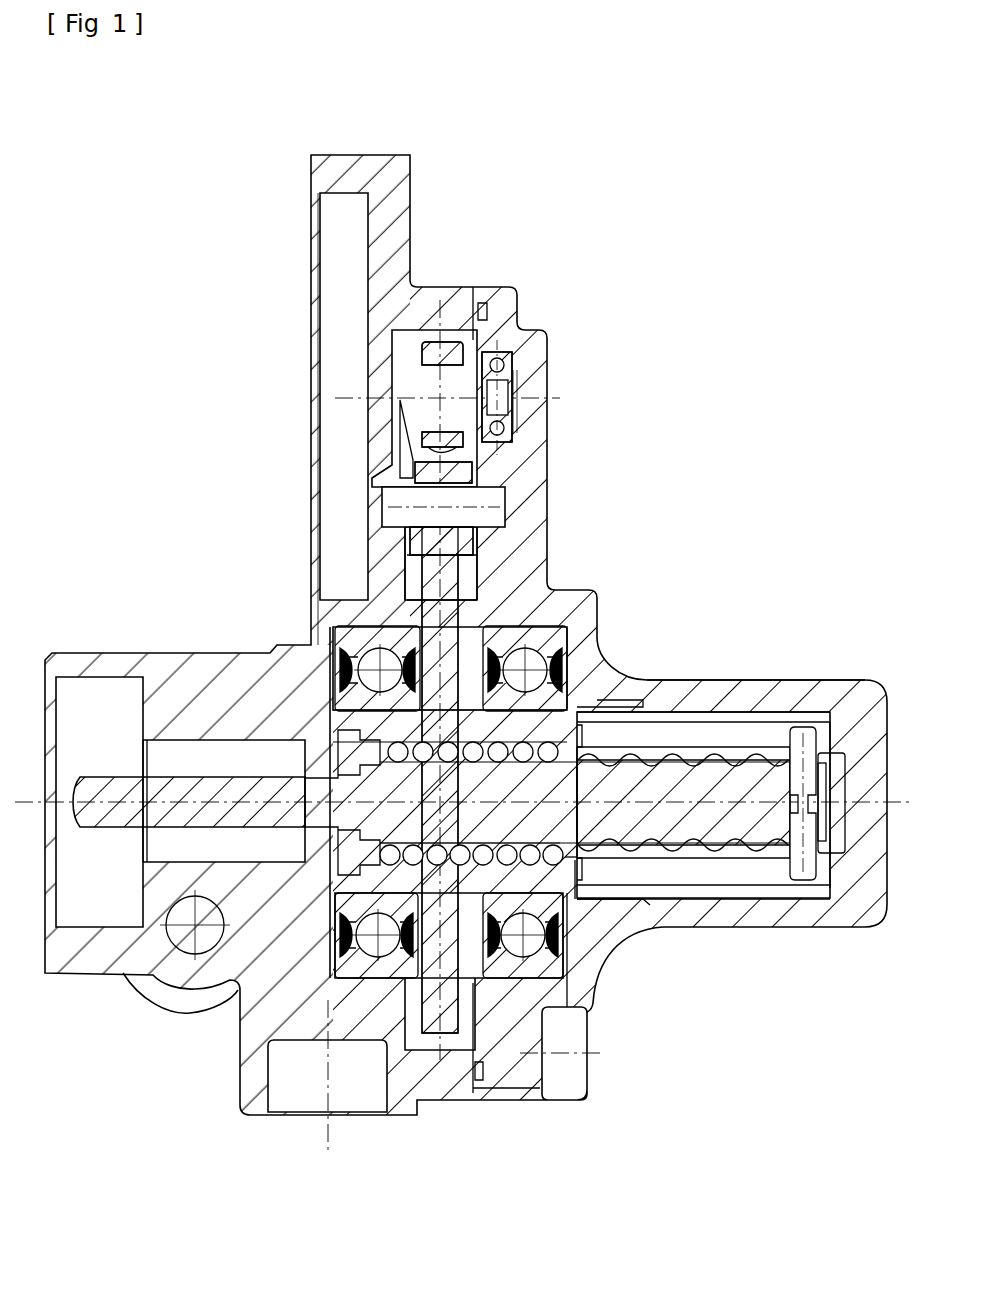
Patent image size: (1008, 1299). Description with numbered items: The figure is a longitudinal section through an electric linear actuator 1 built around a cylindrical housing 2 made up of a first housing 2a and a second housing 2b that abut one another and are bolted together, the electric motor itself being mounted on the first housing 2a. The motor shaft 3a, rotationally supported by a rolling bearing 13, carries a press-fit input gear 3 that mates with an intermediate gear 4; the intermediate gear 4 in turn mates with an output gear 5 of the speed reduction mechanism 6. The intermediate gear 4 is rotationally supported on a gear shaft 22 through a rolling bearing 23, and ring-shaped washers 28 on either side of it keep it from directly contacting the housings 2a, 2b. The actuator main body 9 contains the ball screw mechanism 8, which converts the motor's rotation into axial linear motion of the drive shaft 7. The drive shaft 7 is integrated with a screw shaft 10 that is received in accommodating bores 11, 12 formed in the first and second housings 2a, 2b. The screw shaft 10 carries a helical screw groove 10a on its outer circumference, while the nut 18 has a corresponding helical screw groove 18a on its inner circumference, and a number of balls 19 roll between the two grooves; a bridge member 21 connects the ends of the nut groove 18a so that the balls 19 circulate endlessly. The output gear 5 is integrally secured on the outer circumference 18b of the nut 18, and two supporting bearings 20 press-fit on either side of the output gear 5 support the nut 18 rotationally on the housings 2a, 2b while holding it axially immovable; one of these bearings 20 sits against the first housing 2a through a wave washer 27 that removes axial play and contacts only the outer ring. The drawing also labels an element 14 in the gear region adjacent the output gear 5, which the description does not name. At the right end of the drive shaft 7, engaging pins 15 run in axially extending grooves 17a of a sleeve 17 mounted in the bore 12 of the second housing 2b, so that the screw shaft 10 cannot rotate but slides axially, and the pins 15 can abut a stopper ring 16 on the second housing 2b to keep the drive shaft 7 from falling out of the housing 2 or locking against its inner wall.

The electric linear actuator 1 is at (175, 421).
The cylindrical housing 2 is at (508, 1200).
The first housing 2a is at (437, 1082).
The second housing 2b is at (498, 1082).
The input gear 3 is at (448, 340).
The motor shaft 3a is at (380, 380).
The intermediate gear 4 is at (480, 547).
The output gear 5 is at (480, 587).
The speed reduction mechanism 6 is at (640, 495).
The drive shaft 7 is at (237, 792).
The ball screw mechanism 8 is at (603, 878).
The actuator main body 9 is at (706, 678).
The screw shaft 10 is at (736, 858).
The helical screw groove 10a is at (666, 846).
The accommodating bore 11 is at (146, 772).
The accommodating bore 12 is at (770, 735).
The rolling bearing 13 is at (512, 365).
The gear wheel 14 is at (488, 640).
The engaging pins 15 is at (808, 737).
The stopper ring 16 is at (579, 738).
The sleeve 17 is at (700, 712).
The axially extending grooves 17a is at (645, 680).
The nut 18 is at (322, 707).
The helical screw groove 18a is at (432, 862).
The outer circumference of the nut 18b is at (388, 712).
The balls 19 is at (535, 755).
The supporting bearings 20 is at (240, 1030).
The bridge member 21 is at (465, 862).
The gear shaft 22 is at (400, 498).
The rolling bearing 23 is at (398, 470).
The washer 27 is at (333, 625).
The washers 28 is at (478, 482).